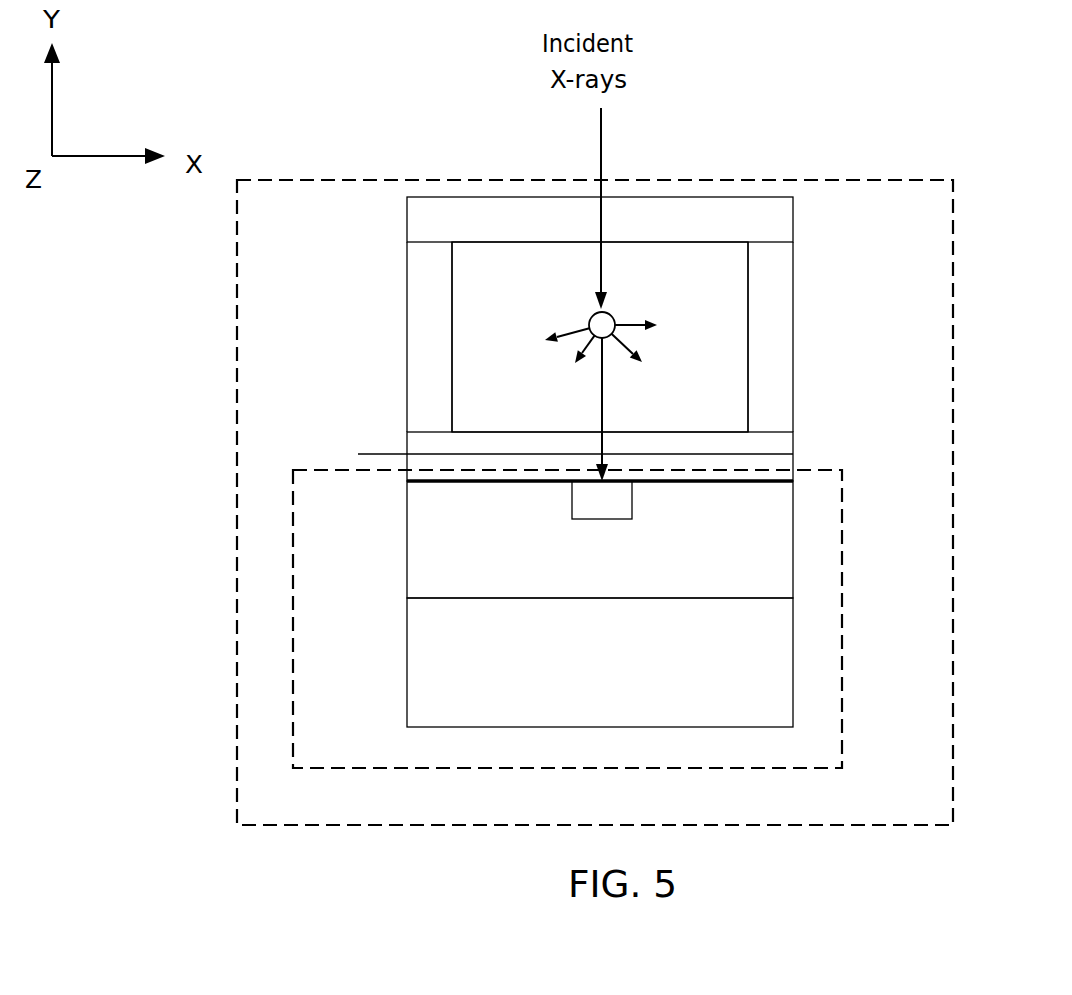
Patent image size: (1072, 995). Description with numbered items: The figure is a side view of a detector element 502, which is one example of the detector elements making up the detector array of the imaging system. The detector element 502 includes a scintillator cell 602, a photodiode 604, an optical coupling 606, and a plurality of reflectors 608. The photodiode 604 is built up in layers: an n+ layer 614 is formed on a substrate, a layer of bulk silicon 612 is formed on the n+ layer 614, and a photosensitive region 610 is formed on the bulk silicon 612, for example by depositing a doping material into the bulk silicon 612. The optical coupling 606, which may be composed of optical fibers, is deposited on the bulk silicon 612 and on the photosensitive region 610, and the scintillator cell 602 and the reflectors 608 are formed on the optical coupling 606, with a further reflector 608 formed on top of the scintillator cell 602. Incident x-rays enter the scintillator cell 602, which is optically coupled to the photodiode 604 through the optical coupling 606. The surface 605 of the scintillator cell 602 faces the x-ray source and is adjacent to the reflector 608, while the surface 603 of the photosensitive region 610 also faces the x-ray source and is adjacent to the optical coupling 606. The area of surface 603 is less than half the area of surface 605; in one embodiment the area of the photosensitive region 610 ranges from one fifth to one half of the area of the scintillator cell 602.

The detector element 502 is at (953, 500).
The scintillator cell 602 is at (714, 380).
The surface of photosensitive region 603 is at (623, 482).
The photodiode 604 is at (842, 618).
The surface of scintillator cell 605 is at (503, 239).
The optical coupling 606 is at (793, 453).
The reflectors 608 is at (757, 197).
The photosensitive region 610 is at (632, 500).
The bulk silicon 612 is at (407, 544).
The n+ layer 614 is at (407, 669).